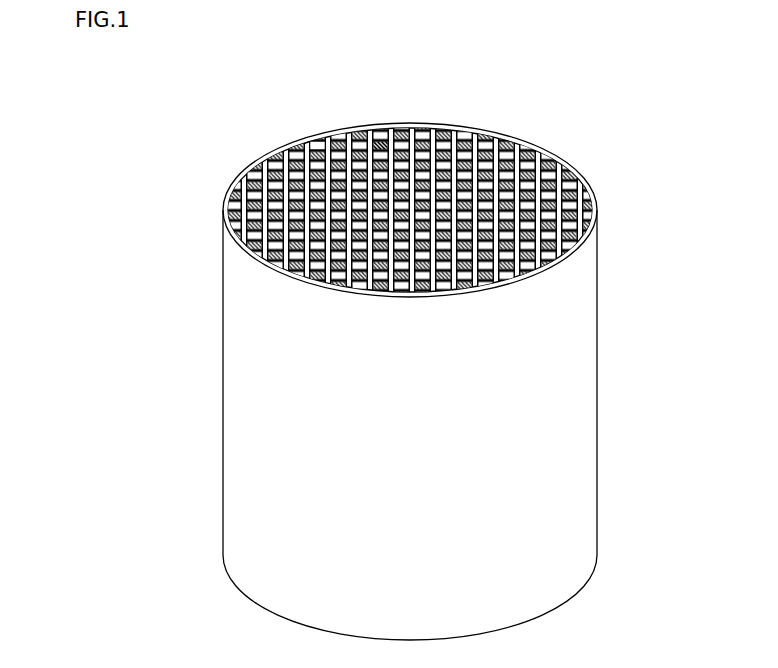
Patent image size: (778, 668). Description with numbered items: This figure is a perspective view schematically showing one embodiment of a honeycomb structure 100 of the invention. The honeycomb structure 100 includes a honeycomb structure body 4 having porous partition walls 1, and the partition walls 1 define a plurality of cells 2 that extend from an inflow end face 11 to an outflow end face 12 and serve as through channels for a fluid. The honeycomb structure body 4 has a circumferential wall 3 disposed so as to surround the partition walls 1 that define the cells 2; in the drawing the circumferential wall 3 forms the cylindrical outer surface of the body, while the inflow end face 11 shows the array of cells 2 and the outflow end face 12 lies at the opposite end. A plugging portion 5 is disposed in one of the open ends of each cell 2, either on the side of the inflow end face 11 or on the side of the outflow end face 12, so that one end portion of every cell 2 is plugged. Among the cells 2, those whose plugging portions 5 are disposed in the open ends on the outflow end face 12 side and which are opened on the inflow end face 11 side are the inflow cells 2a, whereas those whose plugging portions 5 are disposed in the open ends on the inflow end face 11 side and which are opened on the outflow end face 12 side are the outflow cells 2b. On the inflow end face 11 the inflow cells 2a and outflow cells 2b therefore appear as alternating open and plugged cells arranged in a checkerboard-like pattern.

The honeycomb structure 100 is at (660, 70).
The partition wall 1 is at (455, 142).
The cell 2 is at (381, 106).
The inflow cell 2a is at (381, 147).
The outflow cell 2b is at (317, 148).
The circumferential wall 3 is at (577, 276).
The honeycomb structure body 4 is at (600, 377).
The plugging portion 5 is at (510, 152).
The inflow end face 11 is at (236, 177).
The outflow end face 12 is at (236, 590).